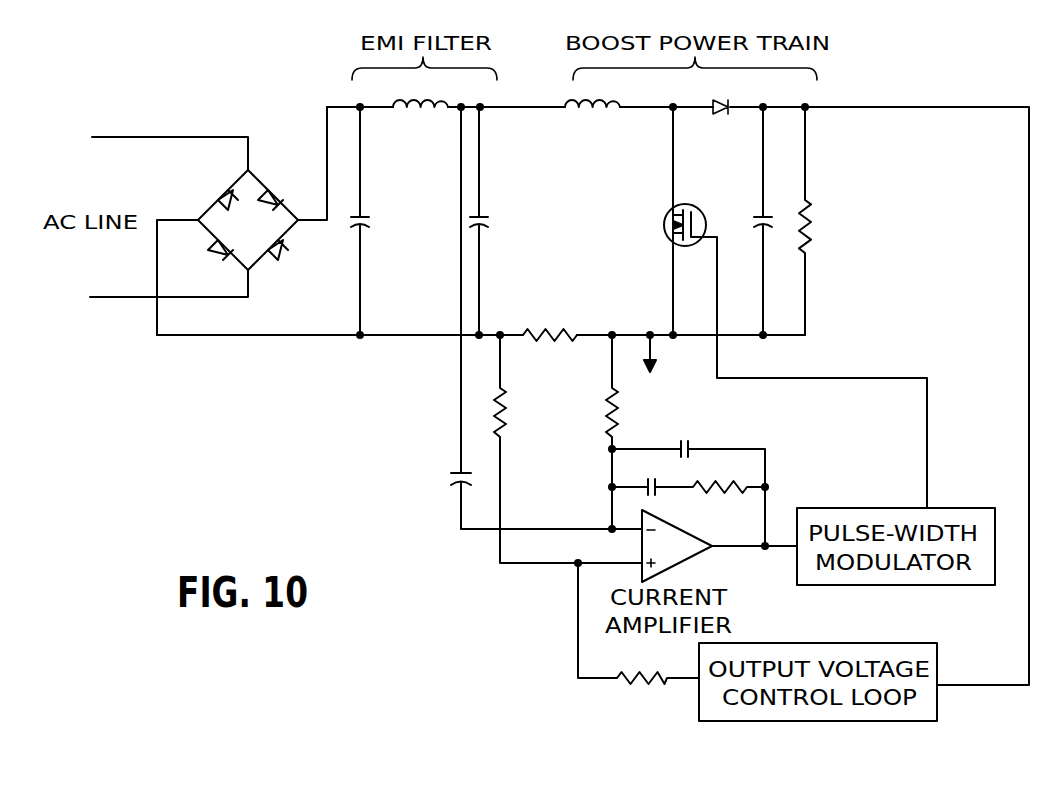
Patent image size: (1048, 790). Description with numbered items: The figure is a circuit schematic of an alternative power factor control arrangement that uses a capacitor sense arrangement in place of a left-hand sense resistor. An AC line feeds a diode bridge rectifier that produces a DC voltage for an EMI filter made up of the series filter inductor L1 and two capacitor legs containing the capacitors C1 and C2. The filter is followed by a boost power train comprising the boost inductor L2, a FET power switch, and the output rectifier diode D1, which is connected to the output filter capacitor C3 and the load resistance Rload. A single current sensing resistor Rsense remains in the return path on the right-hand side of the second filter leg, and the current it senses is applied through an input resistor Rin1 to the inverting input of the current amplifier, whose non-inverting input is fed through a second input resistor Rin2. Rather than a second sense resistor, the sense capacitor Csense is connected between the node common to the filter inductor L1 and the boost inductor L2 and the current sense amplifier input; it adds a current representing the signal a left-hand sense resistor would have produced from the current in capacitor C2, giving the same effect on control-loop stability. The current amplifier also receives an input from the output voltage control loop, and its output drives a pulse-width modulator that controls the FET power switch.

The series filter inductor L1 is at (420, 89).
The boost inductor L2 is at (592, 89).
The output rectifier diode D1 is at (723, 93).
The filter capacitor C1 is at (378, 221).
The filter capacitor C2 is at (497, 221).
The output filter capacitor C3 is at (747, 221).
The load Rload is at (838, 221).
The current sensing resistor Rsense is at (550, 317).
The sense capacitor Csense is at (489, 318).
The current amplifier input resistor 1 Rin1 is at (643, 432).
The current amplifier input resistor 2 Rin2 is at (568, 449).